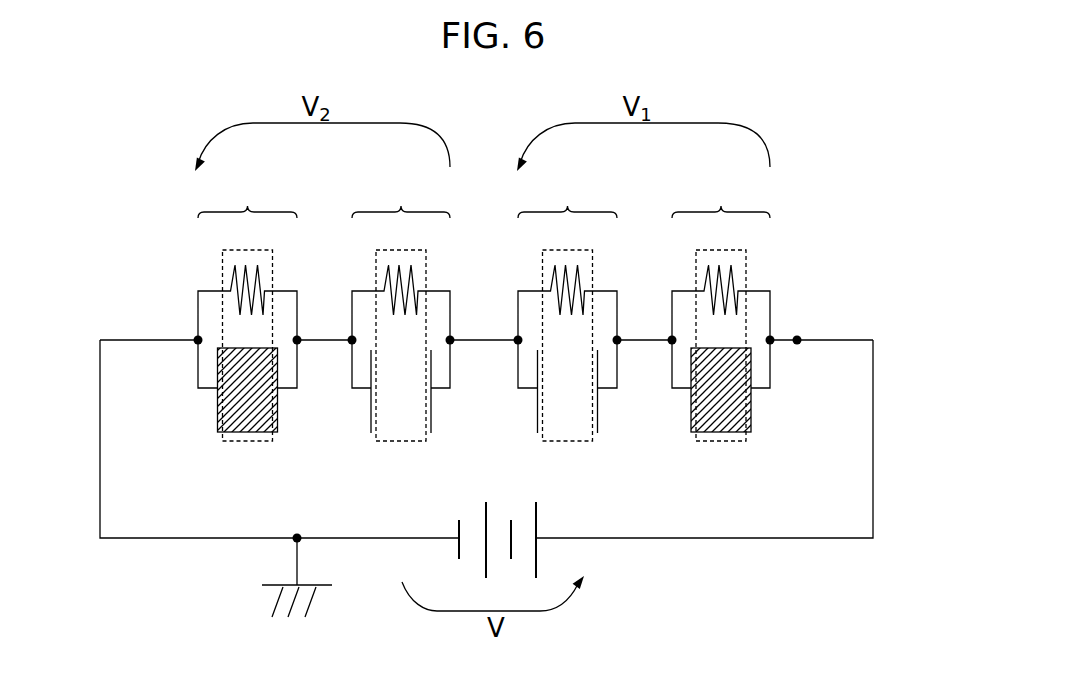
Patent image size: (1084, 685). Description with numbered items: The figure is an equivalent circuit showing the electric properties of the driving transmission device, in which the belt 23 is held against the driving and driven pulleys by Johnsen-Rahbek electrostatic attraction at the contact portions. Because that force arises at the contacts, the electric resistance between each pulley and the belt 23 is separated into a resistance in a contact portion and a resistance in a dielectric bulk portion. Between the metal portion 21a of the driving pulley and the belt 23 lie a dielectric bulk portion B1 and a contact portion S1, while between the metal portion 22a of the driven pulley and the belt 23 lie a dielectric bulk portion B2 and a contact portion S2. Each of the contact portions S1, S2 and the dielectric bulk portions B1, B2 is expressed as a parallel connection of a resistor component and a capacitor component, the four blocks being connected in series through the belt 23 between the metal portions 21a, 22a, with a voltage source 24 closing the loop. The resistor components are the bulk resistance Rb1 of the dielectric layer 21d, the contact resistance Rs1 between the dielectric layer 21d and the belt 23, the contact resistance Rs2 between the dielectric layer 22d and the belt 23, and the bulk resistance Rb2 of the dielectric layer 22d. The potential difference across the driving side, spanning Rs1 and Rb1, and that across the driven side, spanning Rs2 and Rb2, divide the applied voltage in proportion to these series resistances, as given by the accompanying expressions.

The metal portion 21a is at (828, 340).
The metal portion 22a is at (140, 340).
The dielectric layer 21d is at (751, 408).
The dielectric layer 22d is at (278, 408).
The belt 23 is at (480, 340).
The power source (battery) 24 is at (538, 520).
The dielectric bulk portion B1 is at (728, 333).
The dielectric bulk portion B2 is at (254, 333).
The contact portion S1 is at (568, 307).
The contact portion S2 is at (401, 307).
The bulk resistance Rb1 is at (721, 330).
The bulk resistance Rb2 is at (248, 330).
The contact resistance Rs1 is at (568, 330).
The contact resistance Rs2 is at (401, 330).